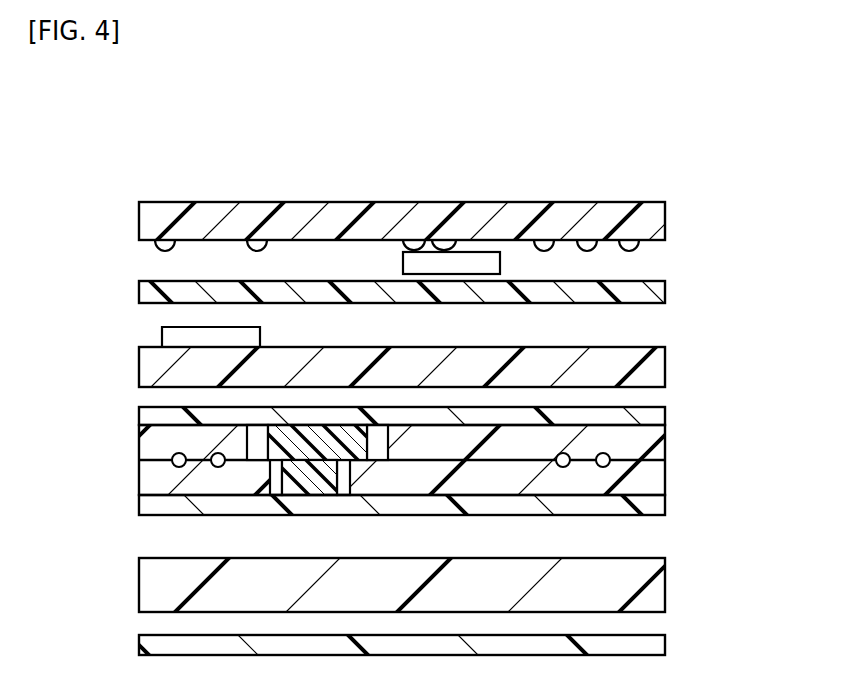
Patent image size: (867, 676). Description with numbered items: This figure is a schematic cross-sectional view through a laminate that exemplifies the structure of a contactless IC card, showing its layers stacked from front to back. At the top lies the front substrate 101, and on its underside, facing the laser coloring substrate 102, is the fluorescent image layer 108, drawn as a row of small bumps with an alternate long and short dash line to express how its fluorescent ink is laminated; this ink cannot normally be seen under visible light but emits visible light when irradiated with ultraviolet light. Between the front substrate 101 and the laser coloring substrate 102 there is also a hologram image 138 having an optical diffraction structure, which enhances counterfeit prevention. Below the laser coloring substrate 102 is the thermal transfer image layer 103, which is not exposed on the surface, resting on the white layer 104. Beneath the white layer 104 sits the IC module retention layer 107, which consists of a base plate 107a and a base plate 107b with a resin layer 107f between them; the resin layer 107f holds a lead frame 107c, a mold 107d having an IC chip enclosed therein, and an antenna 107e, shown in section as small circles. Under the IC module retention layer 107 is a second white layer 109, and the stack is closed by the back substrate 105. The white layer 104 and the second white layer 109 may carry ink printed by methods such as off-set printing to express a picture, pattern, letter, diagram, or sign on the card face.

The front substrate 101 is at (657, 222).
The laser coloring substrate 102 is at (657, 290).
The thermal transfer image layer 103 is at (175, 341).
The white layer 104 is at (657, 370).
The back substrate 105 is at (655, 645).
The IC module retention layer 107 is at (421, 451).
The base plate 107a is at (655, 414).
The base plate 107b is at (655, 505).
The lead frame 107c is at (350, 452).
The mold 107d is at (300, 483).
The antenna 107e is at (563, 468).
The resin layer 107f is at (384, 460).
The fluorescent image layer 108 is at (160, 243).
The second white layer 109 is at (655, 596).
The hologram image 138 is at (482, 259).